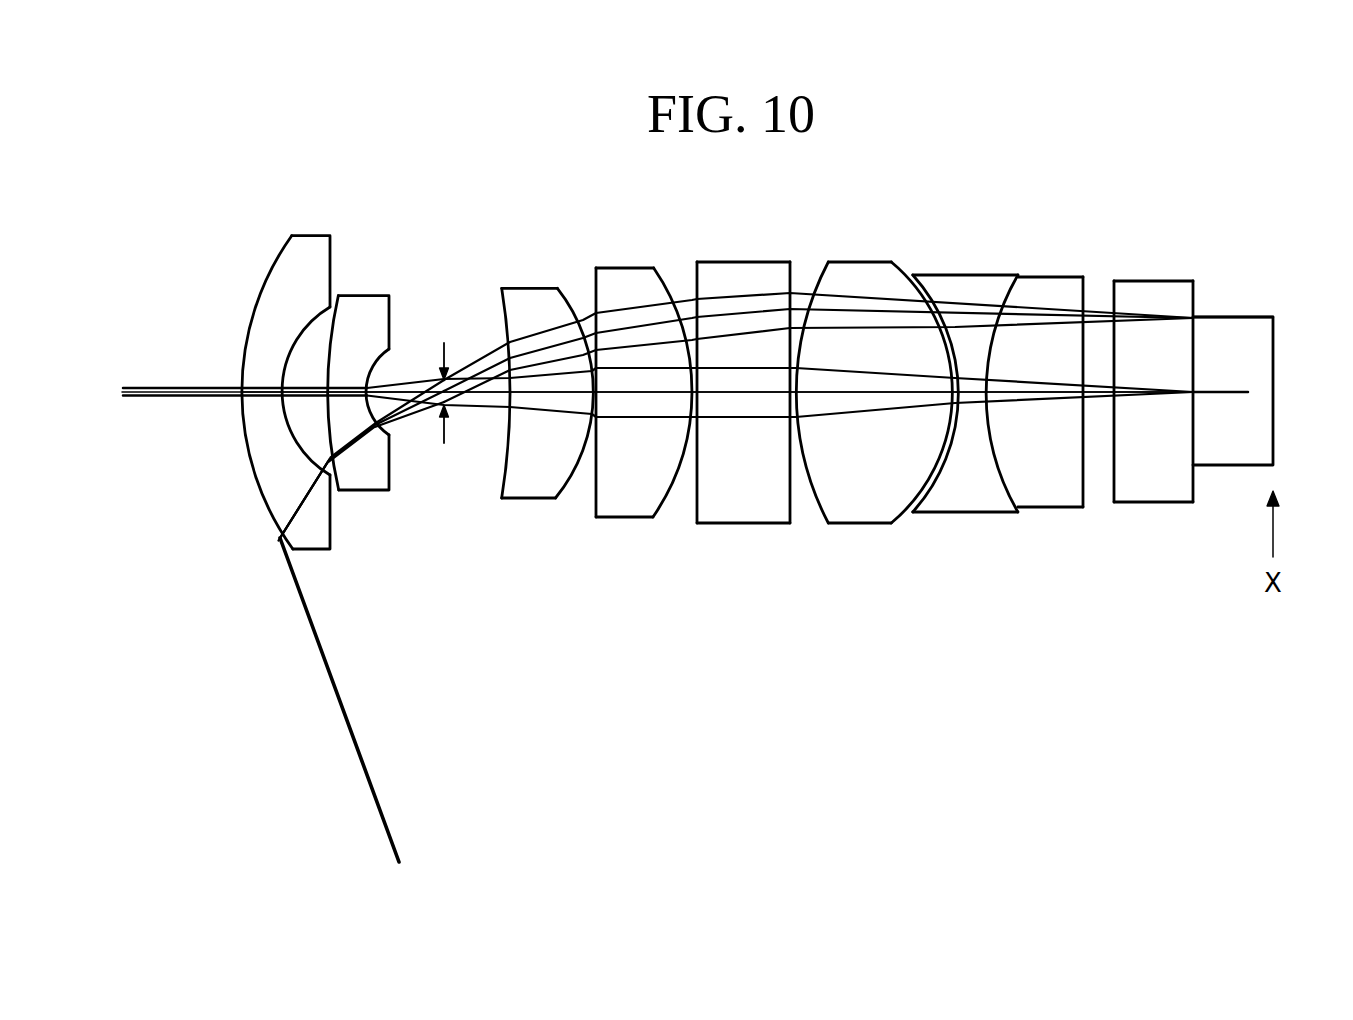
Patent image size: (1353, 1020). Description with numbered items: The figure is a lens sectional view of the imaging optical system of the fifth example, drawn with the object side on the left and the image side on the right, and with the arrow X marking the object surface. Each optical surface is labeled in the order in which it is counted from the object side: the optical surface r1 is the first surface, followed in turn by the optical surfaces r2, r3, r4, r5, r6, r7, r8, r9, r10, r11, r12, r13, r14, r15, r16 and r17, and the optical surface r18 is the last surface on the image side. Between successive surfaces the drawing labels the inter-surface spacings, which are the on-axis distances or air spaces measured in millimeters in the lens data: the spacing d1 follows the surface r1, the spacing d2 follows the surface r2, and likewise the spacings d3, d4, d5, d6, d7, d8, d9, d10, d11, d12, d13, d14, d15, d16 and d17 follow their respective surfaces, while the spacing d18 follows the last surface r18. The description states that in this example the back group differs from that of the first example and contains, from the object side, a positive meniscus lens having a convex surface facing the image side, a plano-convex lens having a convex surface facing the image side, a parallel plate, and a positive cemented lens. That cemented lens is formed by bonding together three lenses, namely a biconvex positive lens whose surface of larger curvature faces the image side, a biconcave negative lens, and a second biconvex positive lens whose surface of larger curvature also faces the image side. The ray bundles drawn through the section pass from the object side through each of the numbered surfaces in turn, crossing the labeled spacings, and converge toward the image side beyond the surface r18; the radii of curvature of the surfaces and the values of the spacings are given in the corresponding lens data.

The optical surface r1 is at (240, 421).
The optical surface r2 is at (300, 428).
The optical surface r3 is at (334, 478).
The optical surface r4 is at (369, 408).
The optical surface r5 is at (448, 432).
The optical surface r6 is at (503, 455).
The optical surface r7 is at (565, 488).
The optical surface r8 is at (596, 518).
The optical surface r9 is at (664, 502).
The optical surface r10 is at (697, 525).
The optical surface r11 is at (791, 525).
The optical surface r12 is at (824, 523).
The optical surface r13 is at (925, 489).
The optical surface r14 is at (1000, 489).
The optical surface r15 is at (1083, 493).
The optical surface r16 is at (1105, 492).
The optical surface r17 is at (1195, 452).
The optical surface r18 is at (1182, 420).
The inter-surface spacing d1 is at (263, 386).
The inter-surface spacing d2 is at (305, 388).
The inter-surface spacing d3 is at (348, 388).
The inter-surface spacing d4 is at (403, 385).
The inter-surface spacing d5 is at (486, 372).
The inter-surface spacing d6 is at (549, 395).
The inter-surface spacing d7 is at (592, 365).
The inter-surface spacing d8 is at (651, 395).
The inter-surface spacing d9 is at (694, 370).
The inter-surface spacing d10 is at (743, 397).
The inter-surface spacing d11 is at (796, 390).
The inter-surface spacing d12 is at (865, 390).
The inter-surface spacing d13 is at (971, 387).
The inter-surface spacing d14 is at (1040, 387).
The inter-surface spacing d15 is at (1096, 387).
The inter-surface spacing d16 is at (1148, 387).
The inter-surface spacing d17 is at (1199, 384).
The inter-surface spacing d18 is at (1240, 385).